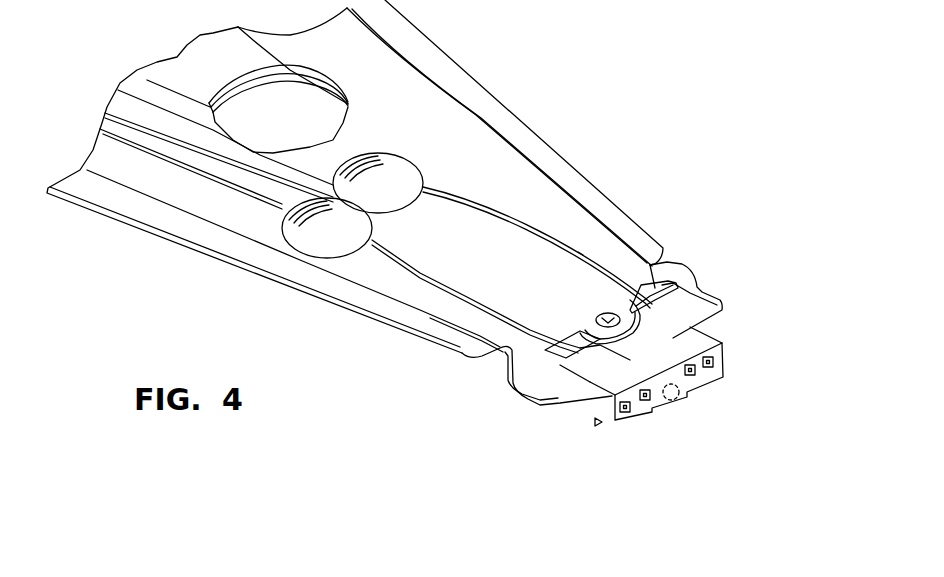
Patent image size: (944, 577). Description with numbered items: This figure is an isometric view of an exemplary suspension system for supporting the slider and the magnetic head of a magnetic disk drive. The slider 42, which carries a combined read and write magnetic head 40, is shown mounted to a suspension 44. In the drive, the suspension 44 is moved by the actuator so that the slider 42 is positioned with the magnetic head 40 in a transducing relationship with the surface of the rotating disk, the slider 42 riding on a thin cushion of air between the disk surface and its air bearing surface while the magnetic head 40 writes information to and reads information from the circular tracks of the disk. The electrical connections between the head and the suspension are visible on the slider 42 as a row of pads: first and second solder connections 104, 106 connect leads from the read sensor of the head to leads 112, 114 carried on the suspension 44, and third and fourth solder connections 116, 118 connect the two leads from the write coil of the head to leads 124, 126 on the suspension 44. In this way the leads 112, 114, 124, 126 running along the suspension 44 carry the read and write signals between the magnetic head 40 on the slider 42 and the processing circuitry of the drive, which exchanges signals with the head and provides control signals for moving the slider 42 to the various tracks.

The magnetic head 40 is at (678, 400).
The slider 42 is at (567, 413).
The suspension 44 is at (525, 122).
The first solder connection 104 is at (620, 418).
The second solder connection 106 is at (644, 412).
The lead 112 is at (397, 268).
The lead 114 is at (450, 290).
The third solder connection 116 is at (693, 377).
The fourth solder connection 118 is at (713, 360).
The lead 124 is at (503, 222).
The lead 126 is at (579, 252).